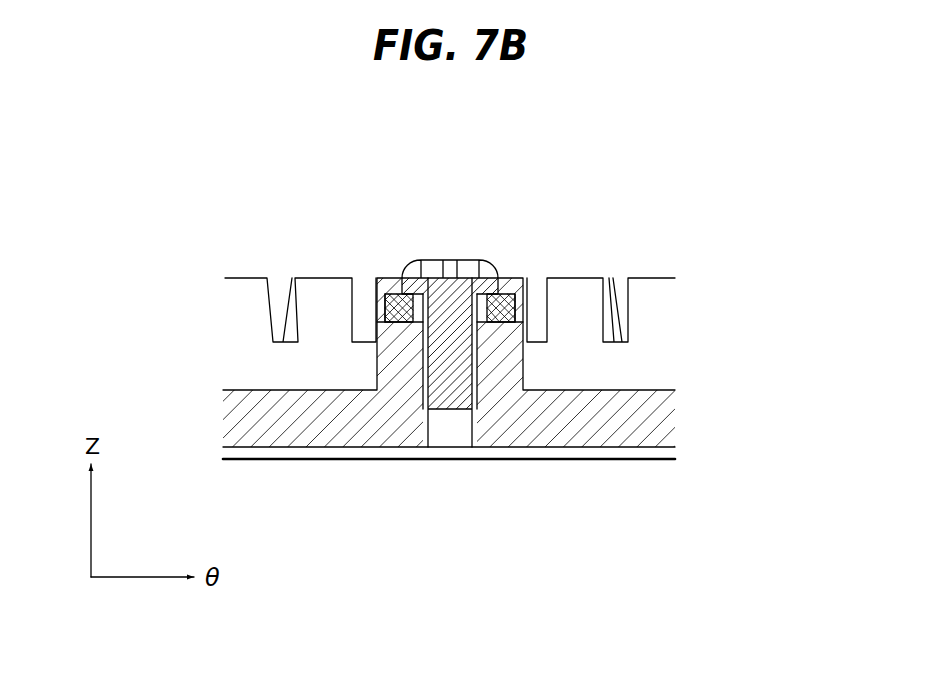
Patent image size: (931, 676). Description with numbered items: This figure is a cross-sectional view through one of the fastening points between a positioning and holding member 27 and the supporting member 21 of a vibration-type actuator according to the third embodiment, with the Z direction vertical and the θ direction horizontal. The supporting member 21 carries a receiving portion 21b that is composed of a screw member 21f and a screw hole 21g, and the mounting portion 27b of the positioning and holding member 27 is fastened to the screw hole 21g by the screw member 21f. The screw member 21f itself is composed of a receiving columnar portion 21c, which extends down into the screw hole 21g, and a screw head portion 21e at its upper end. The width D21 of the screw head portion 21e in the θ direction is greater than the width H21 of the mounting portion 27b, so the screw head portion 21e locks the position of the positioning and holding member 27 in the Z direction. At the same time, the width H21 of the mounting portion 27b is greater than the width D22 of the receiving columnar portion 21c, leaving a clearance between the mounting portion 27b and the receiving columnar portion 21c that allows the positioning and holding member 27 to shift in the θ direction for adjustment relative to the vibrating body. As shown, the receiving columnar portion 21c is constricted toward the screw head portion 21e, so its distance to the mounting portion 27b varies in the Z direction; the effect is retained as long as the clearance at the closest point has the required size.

The supporting member 21 is at (563, 430).
The receiving portion 21b is at (547, 260).
The receiving columnar portion 21c is at (477, 428).
The screw head portion 21e is at (488, 272).
The screw member 21f is at (511, 284).
The screw hole 21g is at (478, 358).
The positioning and holding member 27 is at (450, 266).
The mounting portion 27b is at (388, 318).
The width of the screw head portion in the θ direction D21 is at (500, 290).
The width of the mounting portion in the θ direction H21 is at (487, 290).
The width of the receiving columnar portion in the θ direction D22 is at (423, 407).